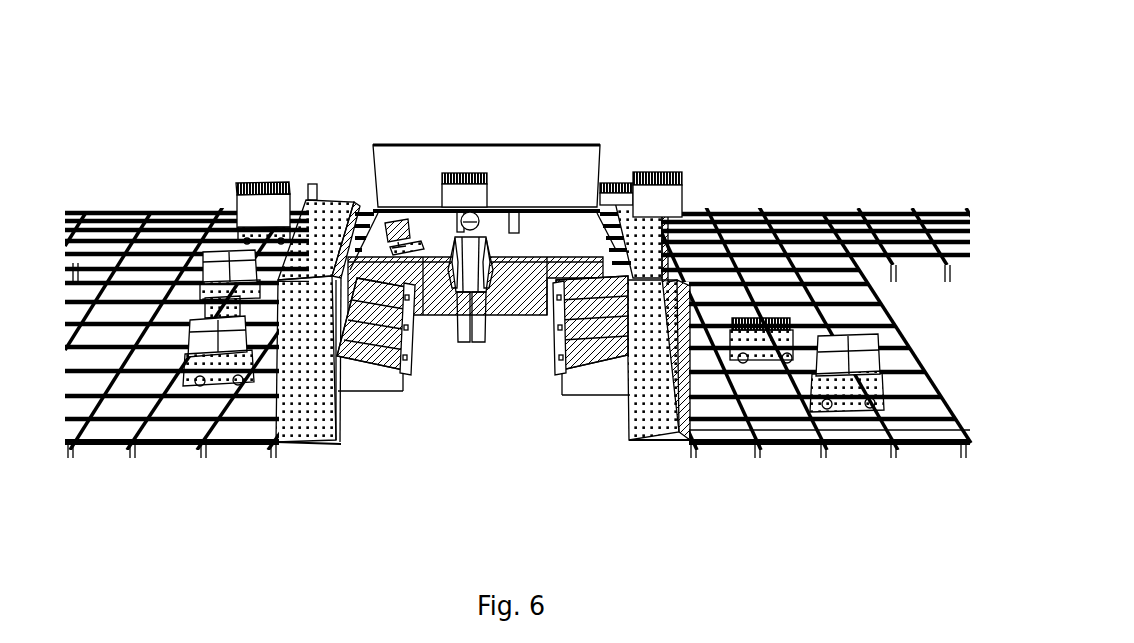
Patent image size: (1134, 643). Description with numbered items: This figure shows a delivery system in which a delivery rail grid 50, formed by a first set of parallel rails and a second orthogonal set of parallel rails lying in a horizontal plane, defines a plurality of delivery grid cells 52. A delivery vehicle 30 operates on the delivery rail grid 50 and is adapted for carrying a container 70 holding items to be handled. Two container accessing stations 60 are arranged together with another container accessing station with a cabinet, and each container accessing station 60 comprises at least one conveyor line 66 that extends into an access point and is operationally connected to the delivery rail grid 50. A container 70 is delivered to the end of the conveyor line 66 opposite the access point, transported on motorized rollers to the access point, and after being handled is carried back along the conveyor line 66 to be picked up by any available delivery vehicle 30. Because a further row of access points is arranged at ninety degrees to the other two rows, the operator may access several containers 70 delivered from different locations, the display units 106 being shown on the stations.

The delivery vehicle 30 is at (230, 210).
The delivery rail grid 50 is at (213, 410).
The delivery grid cells 52 is at (787, 425).
The container accessing station 60 is at (358, 380).
The conveyor line 66 is at (380, 345).
The container 70 is at (392, 312).
The display unit 106 is at (260, 183).